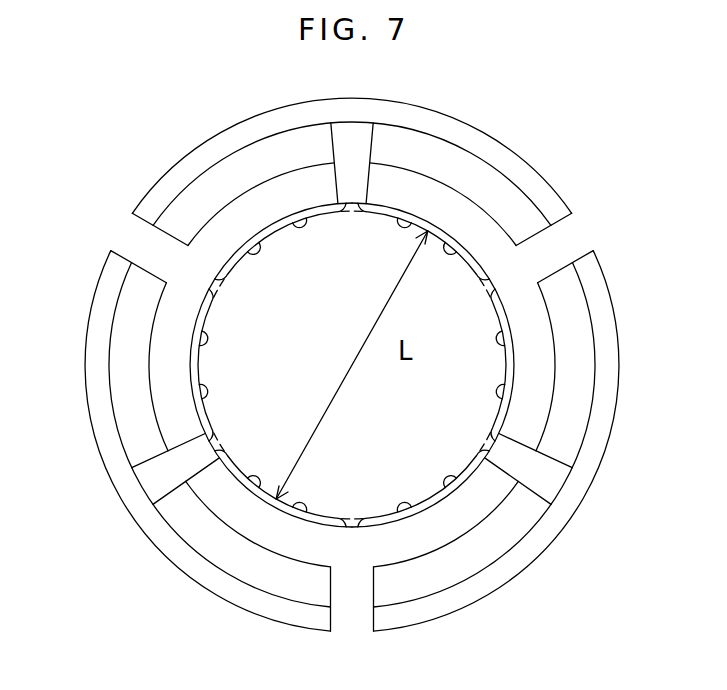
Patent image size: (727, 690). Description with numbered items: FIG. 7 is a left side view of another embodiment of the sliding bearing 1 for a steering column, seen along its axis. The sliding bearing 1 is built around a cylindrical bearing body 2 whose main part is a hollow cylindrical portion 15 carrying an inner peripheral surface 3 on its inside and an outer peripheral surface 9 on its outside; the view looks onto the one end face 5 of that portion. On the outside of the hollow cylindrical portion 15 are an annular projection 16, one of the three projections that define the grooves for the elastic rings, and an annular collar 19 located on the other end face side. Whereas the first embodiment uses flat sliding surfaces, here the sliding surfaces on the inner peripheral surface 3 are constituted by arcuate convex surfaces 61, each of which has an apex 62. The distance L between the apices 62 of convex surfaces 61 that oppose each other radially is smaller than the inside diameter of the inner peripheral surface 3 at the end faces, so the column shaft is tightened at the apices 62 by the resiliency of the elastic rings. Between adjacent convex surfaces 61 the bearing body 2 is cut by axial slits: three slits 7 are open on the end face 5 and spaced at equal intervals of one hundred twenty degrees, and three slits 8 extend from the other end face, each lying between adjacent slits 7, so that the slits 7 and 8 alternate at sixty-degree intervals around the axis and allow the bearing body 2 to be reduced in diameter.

The sliding bearing 1 is at (146, 154).
The bearing body 2 is at (598, 336).
The inner peripheral surface 3 is at (500, 300).
The one end face 5 is at (167, 403).
The slit 7 is at (347, 178).
The slit 8 is at (158, 250).
The outer peripheral surface 9 is at (596, 388).
The hollow cylindrical portion 15 is at (412, 185).
The annular projection 16 is at (512, 200).
The annular collar 19 is at (182, 558).
The arcuate convex surface 61 is at (253, 250).
The apex 62 is at (250, 246).